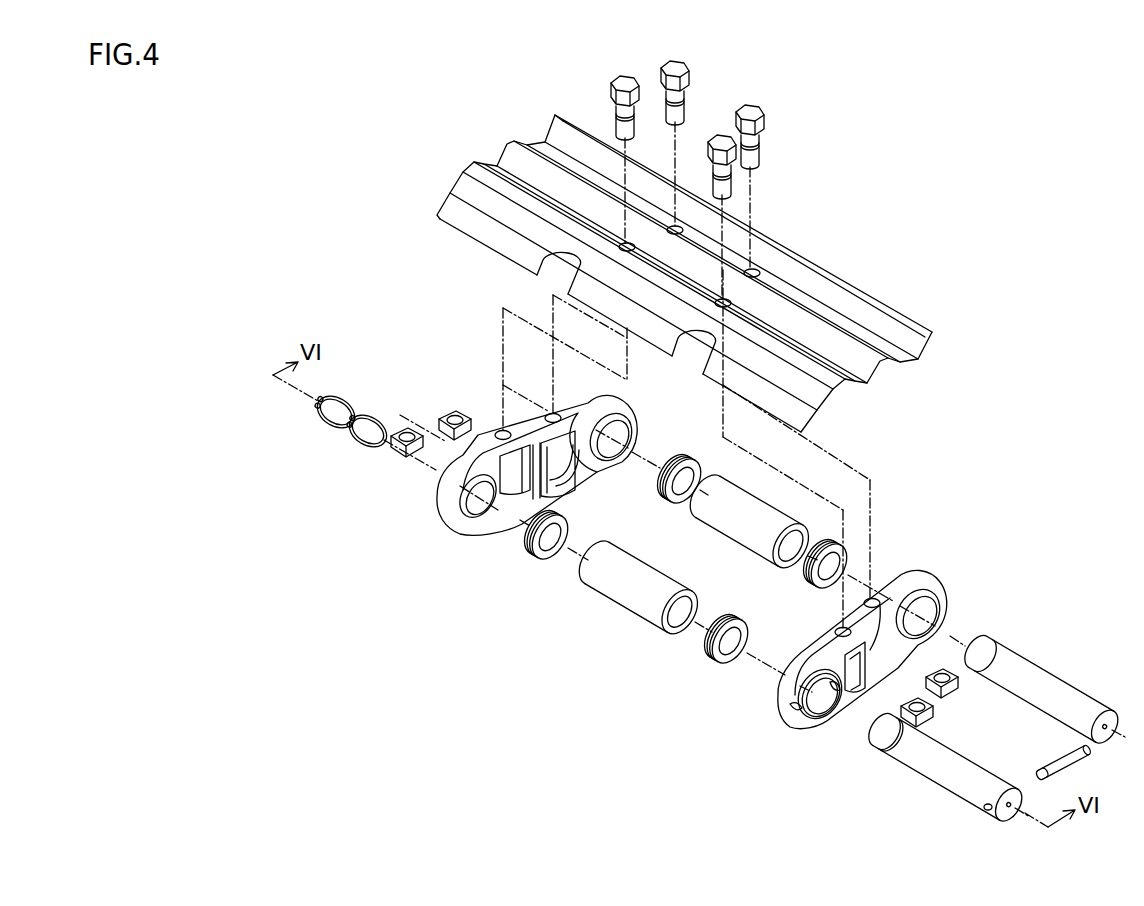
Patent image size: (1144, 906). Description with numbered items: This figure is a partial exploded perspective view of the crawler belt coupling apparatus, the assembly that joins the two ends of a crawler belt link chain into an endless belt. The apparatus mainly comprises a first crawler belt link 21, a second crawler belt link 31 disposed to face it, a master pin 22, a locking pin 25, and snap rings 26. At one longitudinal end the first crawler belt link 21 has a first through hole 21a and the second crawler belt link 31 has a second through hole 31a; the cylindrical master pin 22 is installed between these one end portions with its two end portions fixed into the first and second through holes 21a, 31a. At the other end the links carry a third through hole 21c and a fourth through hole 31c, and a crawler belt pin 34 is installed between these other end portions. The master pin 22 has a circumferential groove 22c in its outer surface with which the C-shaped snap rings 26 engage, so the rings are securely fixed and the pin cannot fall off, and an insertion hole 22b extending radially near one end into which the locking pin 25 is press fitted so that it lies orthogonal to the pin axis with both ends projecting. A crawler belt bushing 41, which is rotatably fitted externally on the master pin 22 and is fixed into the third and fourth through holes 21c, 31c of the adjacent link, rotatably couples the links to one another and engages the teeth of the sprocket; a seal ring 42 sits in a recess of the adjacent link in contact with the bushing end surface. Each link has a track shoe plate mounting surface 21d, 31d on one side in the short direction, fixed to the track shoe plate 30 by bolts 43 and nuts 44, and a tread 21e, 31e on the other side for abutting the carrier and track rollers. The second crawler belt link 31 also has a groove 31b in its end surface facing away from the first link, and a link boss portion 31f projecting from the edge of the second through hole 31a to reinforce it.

The first crawler belt link 21 is at (538, 468).
The first through hole 21a is at (460, 510).
The third through hole 21c is at (617, 430).
The track shoe plate mounting surface 21d is at (556, 421).
The tread 21e is at (580, 473).
The master pin 22 is at (943, 771).
The insertion hole 22b is at (985, 809).
The circumferential groove 22c is at (877, 742).
The locking pin 25 is at (1067, 763).
The snap ring 26 is at (322, 428).
The track shoe plate 30 is at (843, 375).
The second crawler belt link 31 is at (865, 669).
The second through hole 31a is at (819, 727).
The groove 31b is at (793, 713).
The fourth through hole 31c is at (925, 612).
The track shoe plate mounting surface 31d is at (822, 648).
The tread 31e is at (835, 715).
The link boss portion 31f is at (797, 700).
The crawler belt pin 34 is at (1047, 685).
The crawler belt bushing 41 is at (623, 597).
The seal ring 42 is at (545, 562).
The bolt 43 is at (620, 80).
The nut 44 is at (403, 430).